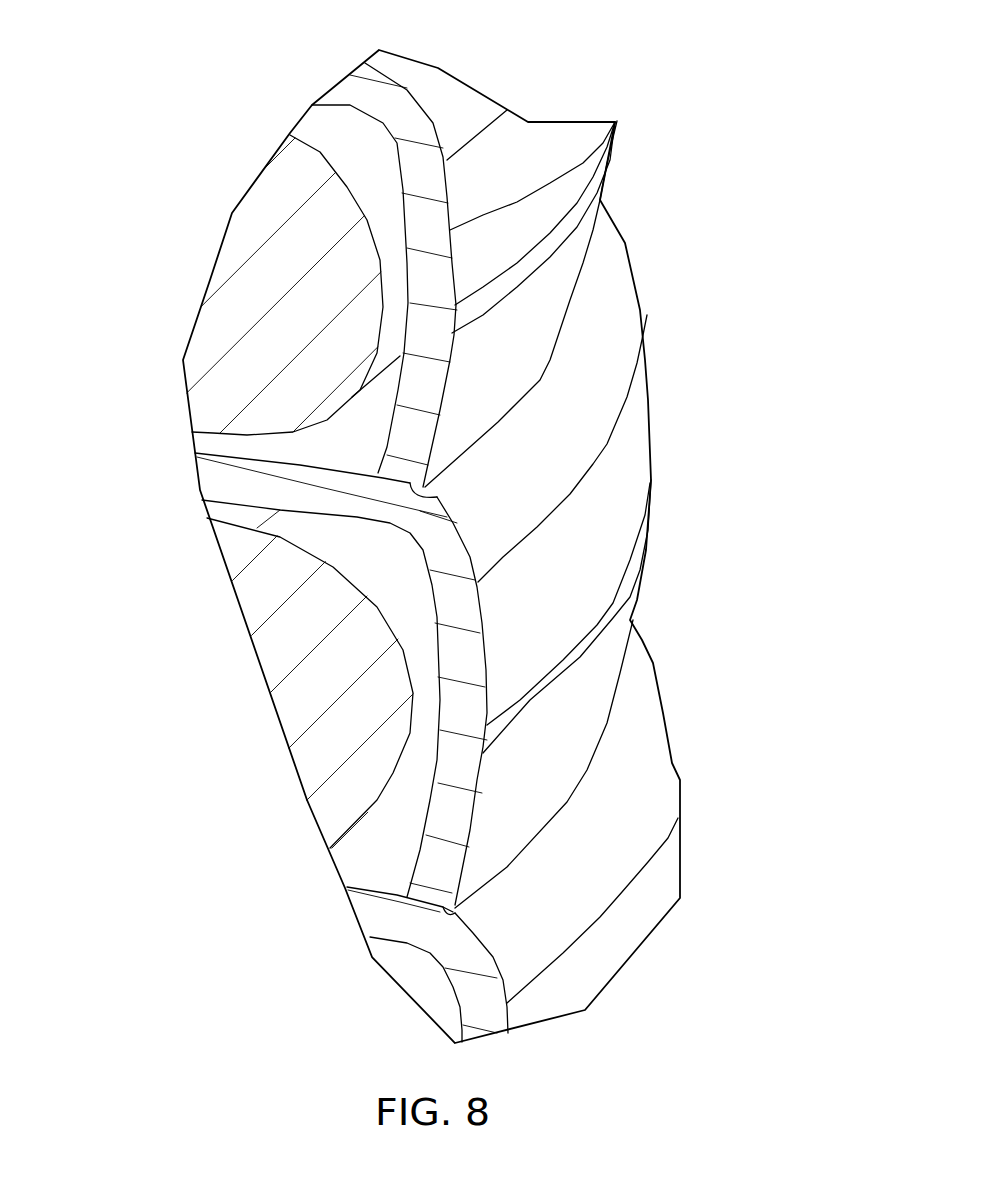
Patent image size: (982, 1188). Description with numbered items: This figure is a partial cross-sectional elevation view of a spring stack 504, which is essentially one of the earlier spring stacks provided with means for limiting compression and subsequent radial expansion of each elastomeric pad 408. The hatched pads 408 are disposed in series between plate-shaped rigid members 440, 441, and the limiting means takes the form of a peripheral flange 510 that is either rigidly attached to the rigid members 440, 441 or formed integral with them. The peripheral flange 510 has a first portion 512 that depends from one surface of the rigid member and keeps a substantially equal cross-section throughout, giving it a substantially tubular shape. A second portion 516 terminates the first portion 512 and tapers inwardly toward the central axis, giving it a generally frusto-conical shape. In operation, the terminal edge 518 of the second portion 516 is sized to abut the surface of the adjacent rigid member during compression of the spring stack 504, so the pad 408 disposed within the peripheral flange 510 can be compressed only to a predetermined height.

The spring stack 504 is at (195, 138).
The elastomeric compressible member 408 is at (183, 330).
The rigid member 440 is at (232, 473).
The end rigid member 441 is at (322, 684).
The peripheral flange 510 is at (432, 268).
The first portion 512 is at (617, 122).
The second portion 516 is at (607, 562).
The terminal edge 518 is at (564, 695).